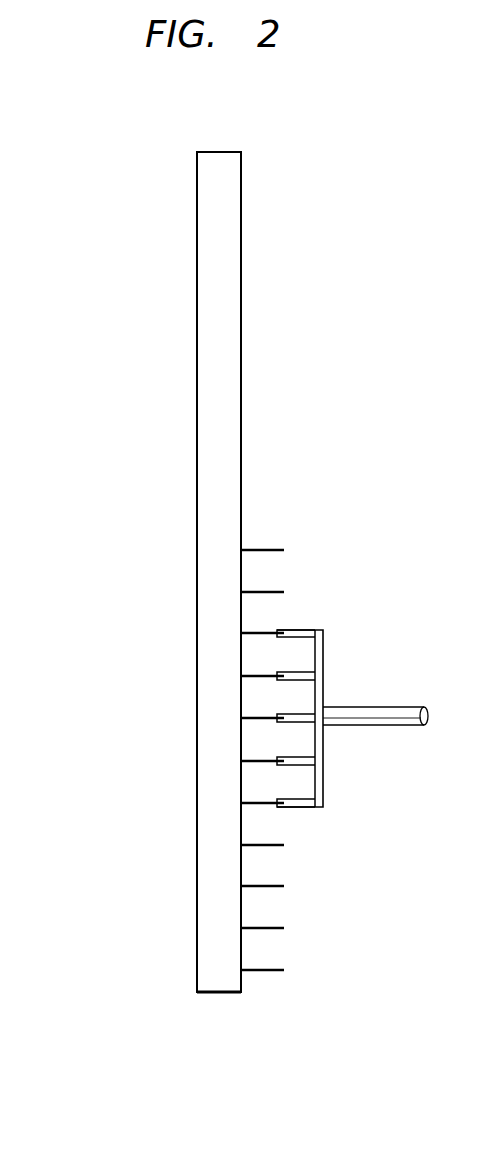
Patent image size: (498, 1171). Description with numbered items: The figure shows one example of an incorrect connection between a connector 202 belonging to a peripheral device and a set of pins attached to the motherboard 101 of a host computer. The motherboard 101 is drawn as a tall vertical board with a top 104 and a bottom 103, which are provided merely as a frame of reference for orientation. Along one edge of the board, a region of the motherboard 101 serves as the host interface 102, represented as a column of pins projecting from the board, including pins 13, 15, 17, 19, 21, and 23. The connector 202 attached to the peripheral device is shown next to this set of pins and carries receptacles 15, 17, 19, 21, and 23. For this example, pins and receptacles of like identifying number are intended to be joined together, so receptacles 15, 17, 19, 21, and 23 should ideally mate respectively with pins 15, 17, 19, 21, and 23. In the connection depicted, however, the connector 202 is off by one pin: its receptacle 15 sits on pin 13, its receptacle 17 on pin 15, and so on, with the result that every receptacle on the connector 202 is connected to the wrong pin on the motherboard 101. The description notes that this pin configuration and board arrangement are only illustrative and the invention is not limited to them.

The motherboard 101 is at (197, 583).
The top 104 is at (217, 150).
The bottom 103 is at (217, 994).
The host interface 102 is at (274, 983).
The pin 13 is at (263, 635).
The pin and receptacle 15 is at (263, 647).
The pin and receptacle 17 is at (263, 689).
The pin and receptacle 19 is at (263, 731).
The pin and receptacle 21 is at (263, 774).
The pin and receptacle 23 is at (260, 815).
The connector 202 is at (324, 743).